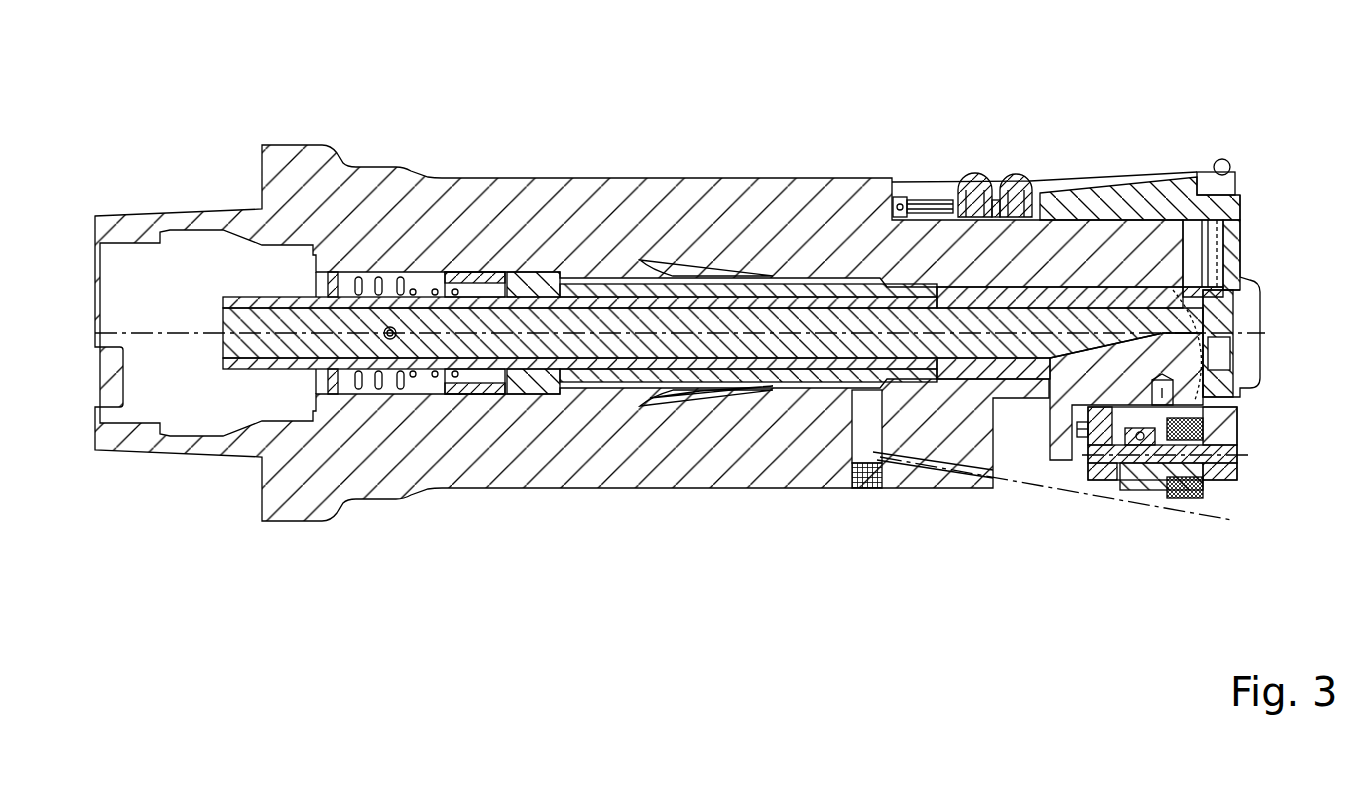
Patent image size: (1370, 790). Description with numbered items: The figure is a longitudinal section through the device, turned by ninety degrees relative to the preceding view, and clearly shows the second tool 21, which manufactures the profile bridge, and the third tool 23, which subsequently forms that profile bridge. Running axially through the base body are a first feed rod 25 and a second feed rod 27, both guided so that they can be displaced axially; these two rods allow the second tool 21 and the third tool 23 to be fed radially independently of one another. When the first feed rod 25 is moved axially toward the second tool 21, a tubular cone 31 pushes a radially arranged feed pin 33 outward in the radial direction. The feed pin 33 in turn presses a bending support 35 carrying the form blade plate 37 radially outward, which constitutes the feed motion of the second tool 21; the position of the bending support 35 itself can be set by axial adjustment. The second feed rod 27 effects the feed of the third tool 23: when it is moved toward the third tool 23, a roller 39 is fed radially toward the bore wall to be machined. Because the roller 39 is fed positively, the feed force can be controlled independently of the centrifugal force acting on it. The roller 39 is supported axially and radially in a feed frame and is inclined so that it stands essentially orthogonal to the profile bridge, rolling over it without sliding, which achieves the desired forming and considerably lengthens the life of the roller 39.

The second tool 21 is at (1204, 130).
The third tool 23 is at (1086, 580).
The first feed rod 25 is at (950, 305).
The second feed rod 27 is at (812, 337).
The tubular cone 31 is at (1232, 402).
The feed pin 33 is at (1218, 257).
The bending support 35 is at (1148, 183).
The form blade plate 37 is at (1231, 165).
The roller 39 is at (1193, 500).